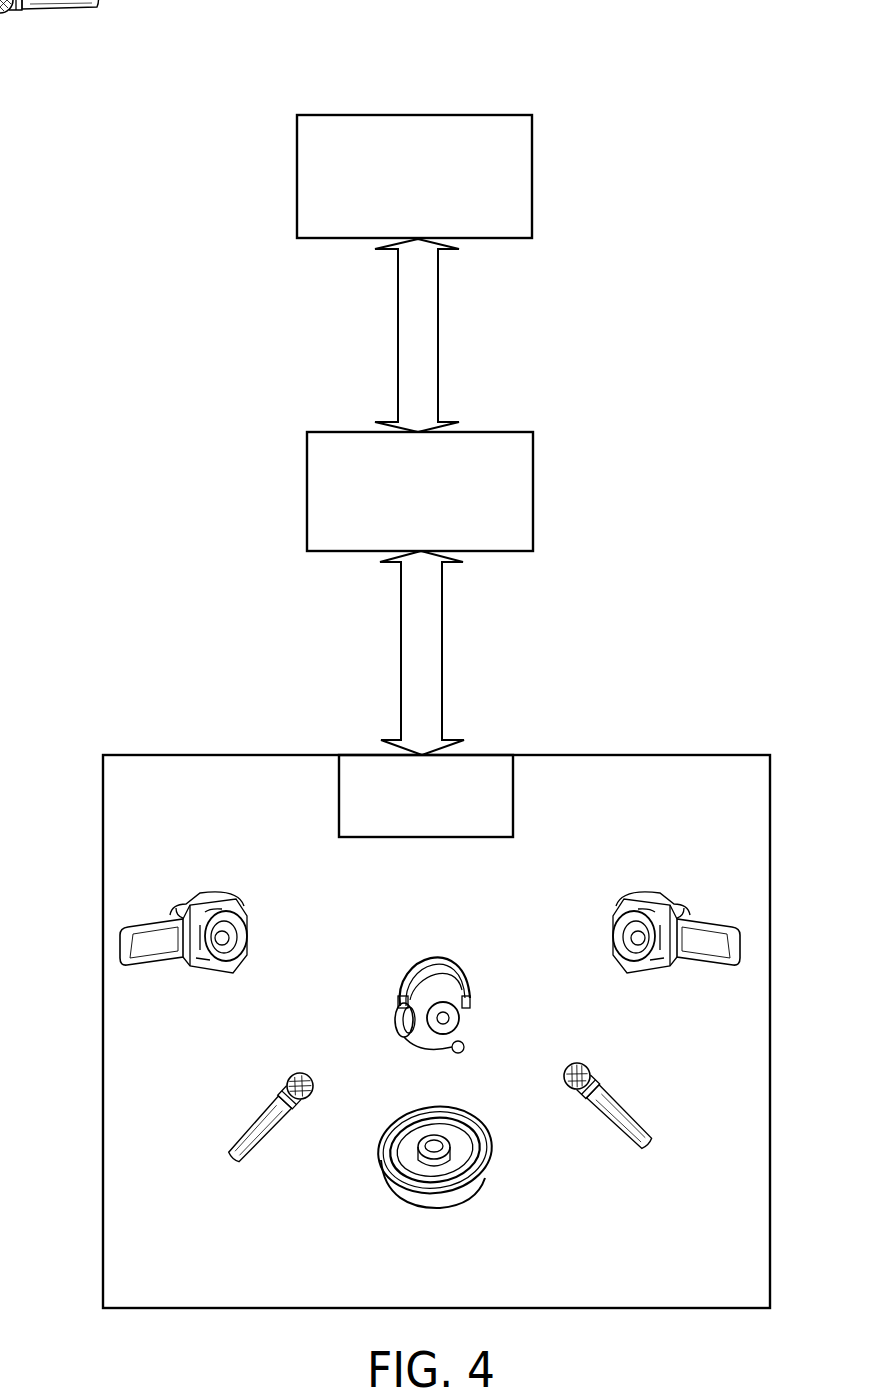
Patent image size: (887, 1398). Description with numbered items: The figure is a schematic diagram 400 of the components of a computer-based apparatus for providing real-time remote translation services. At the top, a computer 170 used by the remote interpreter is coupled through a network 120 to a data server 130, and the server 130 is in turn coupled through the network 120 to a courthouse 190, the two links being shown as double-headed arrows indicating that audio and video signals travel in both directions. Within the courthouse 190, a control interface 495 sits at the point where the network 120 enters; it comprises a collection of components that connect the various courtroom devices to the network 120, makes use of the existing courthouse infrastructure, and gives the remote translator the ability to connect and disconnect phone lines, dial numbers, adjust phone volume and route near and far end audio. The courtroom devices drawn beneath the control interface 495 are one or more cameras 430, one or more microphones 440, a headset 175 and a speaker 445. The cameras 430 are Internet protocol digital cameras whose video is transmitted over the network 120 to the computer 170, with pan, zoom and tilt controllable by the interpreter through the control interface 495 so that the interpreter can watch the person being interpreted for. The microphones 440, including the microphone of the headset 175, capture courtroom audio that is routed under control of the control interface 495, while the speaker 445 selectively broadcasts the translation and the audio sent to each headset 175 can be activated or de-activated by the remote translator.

The courtroom communication system 400 is at (138, 48).
The computer 170 is at (296, 182).
The data server 130 is at (306, 497).
The network 120 is at (398, 347).
The courthouse 190 is at (102, 1027).
The control interface 495 is at (370, 752).
The cameras 430 is at (237, 922).
The headset 175 is at (397, 984).
The microphones 440 is at (272, 1103).
The speaker 445 is at (437, 1104).